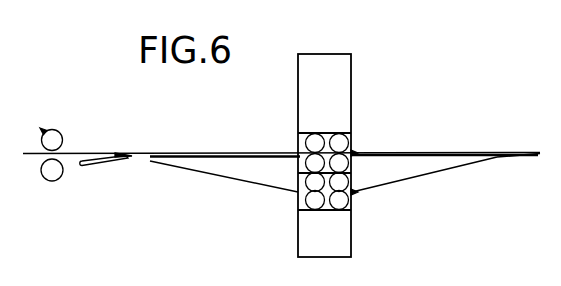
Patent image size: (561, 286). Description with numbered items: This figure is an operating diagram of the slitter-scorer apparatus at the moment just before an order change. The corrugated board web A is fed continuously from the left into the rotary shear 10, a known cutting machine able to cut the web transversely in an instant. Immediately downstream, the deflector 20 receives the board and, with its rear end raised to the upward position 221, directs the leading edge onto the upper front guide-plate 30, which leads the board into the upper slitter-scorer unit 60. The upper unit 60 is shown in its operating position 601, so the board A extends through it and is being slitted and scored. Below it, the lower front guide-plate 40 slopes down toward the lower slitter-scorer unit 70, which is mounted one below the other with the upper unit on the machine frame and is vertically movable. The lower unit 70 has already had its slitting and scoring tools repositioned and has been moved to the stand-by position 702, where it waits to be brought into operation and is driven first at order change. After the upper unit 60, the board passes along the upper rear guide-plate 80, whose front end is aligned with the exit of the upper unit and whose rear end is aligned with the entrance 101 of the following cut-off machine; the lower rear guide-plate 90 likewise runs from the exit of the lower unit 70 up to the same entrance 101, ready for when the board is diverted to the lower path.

The corrugated board web A is at (183, 153).
The rotary shear 10 is at (58, 138).
The deflector 20 is at (105, 165).
The upward position 221 is at (131, 156).
The upper front guide-plate 30 is at (250, 158).
The lower front guide-plate 40 is at (218, 176).
The upper slitter-scorer unit 60 is at (325, 136).
The operating position 601 is at (352, 148).
The lower slitter-scorer unit 70 is at (328, 204).
The stand-by position 702 is at (352, 192).
The upper rear guide-plate 80 is at (427, 160).
The lower rear guide-plate 90 is at (445, 172).
The entrance 101 is at (505, 158).